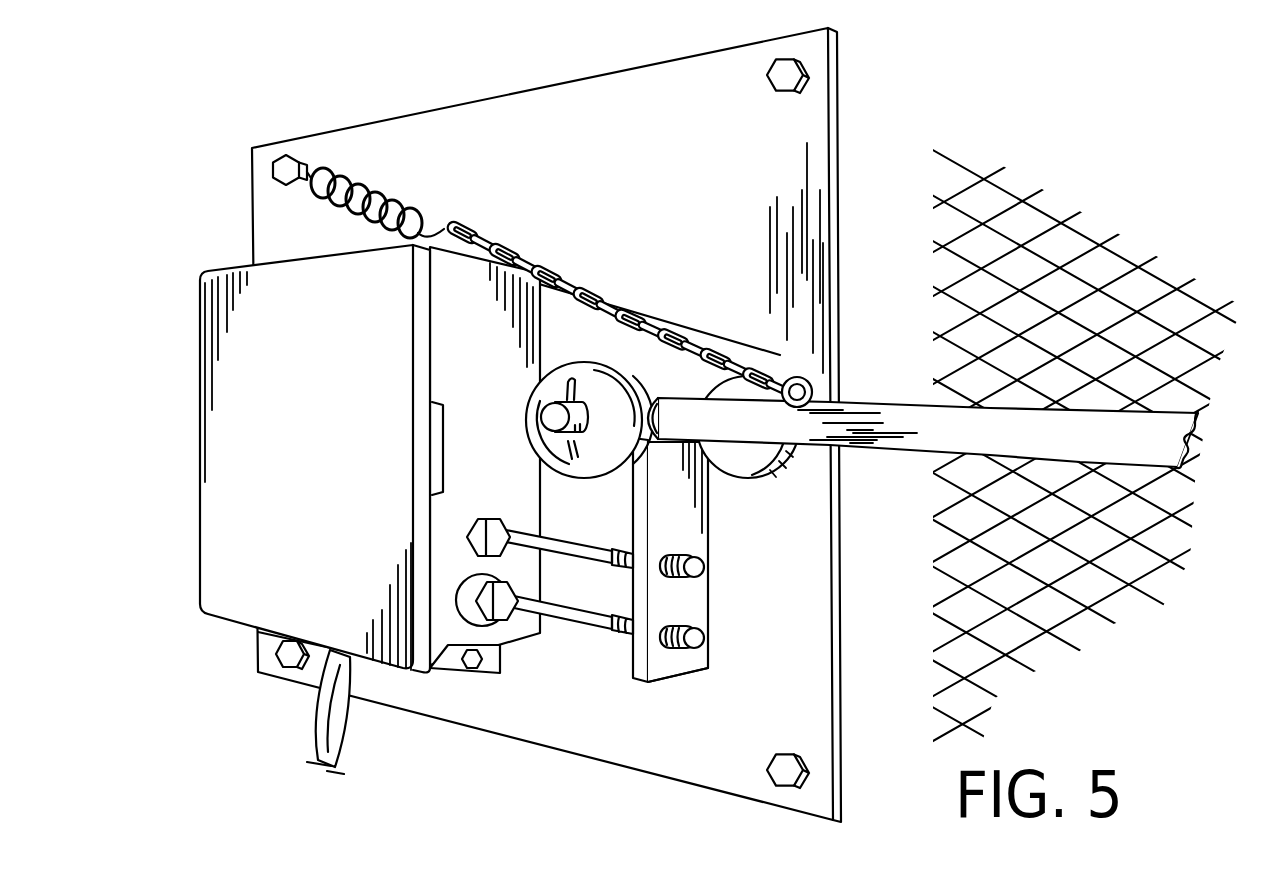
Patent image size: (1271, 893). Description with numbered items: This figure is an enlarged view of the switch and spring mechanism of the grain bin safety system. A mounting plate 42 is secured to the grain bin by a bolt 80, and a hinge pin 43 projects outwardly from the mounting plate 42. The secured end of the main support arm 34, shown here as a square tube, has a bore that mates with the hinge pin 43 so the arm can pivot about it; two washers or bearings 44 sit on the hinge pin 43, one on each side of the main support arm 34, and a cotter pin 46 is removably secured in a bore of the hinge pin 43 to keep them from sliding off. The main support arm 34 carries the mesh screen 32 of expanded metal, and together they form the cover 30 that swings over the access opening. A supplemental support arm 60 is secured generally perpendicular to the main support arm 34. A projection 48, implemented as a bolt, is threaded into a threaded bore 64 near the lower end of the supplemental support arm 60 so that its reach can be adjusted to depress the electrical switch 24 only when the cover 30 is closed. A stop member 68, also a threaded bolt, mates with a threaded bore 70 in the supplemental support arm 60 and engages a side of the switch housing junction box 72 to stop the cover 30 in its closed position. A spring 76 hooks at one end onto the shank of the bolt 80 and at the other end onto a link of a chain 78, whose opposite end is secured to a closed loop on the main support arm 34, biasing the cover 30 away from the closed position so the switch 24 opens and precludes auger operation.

The electrical switch 24 is at (490, 628).
The cover 30 is at (1059, 457).
The mesh screen 32 is at (1083, 232).
The main support arm 34 is at (908, 437).
The mounting plate 42 is at (672, 107).
The hinge pin 43 is at (582, 406).
The washers or bearings 44 is at (752, 460).
The cotter pin 46 is at (567, 396).
The projection 48 is at (577, 622).
The supplemental support arm 60 is at (660, 672).
The threaded bore 64 is at (670, 648).
The stop member 68 is at (557, 546).
The threaded bore 70 is at (668, 578).
The switch housing junction box 72 is at (327, 385).
The spring 76 is at (363, 181).
The chain 78 is at (597, 290).
The bolt 80 is at (282, 155).